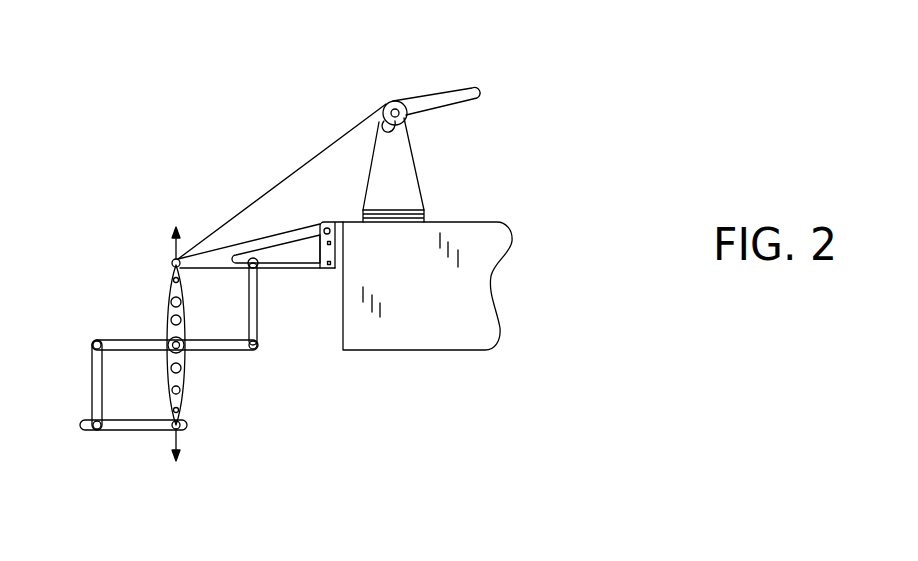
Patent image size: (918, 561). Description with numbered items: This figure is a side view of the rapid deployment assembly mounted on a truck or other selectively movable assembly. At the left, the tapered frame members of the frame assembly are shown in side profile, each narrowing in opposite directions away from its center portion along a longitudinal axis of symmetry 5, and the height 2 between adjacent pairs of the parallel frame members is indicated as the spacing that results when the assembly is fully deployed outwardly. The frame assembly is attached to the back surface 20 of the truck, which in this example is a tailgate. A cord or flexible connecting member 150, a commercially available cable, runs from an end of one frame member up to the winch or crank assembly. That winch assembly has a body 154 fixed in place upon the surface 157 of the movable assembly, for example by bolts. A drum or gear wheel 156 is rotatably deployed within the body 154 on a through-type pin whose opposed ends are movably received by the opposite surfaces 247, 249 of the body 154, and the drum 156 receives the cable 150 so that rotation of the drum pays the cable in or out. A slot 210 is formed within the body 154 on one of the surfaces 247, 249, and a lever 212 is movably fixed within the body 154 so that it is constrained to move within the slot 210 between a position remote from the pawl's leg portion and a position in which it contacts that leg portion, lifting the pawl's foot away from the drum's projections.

The height 2 is at (133, 370).
The longitudinal axis of symmetry 5 is at (174, 258).
The back surface 20 is at (343, 242).
The cord or flexible connecting member 150 is at (279, 185).
The body 154 is at (407, 182).
The drum or gear wheel 156 is at (394, 100).
The surface 157 is at (485, 220).
The slot 210 is at (387, 121).
The lever 212 is at (383, 132).
The surface of body 247 is at (402, 202).
The surface of body 249 is at (404, 118).